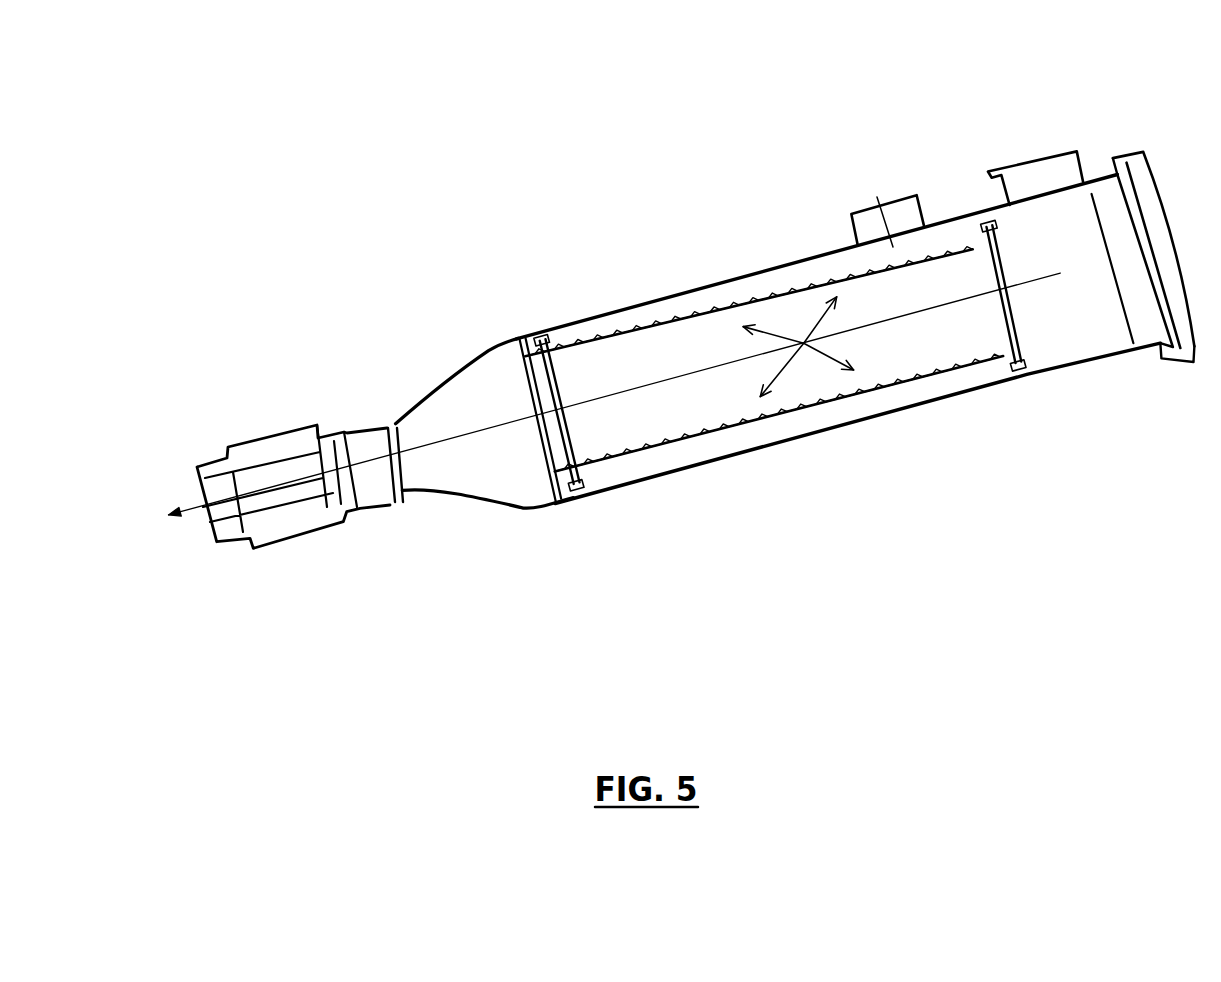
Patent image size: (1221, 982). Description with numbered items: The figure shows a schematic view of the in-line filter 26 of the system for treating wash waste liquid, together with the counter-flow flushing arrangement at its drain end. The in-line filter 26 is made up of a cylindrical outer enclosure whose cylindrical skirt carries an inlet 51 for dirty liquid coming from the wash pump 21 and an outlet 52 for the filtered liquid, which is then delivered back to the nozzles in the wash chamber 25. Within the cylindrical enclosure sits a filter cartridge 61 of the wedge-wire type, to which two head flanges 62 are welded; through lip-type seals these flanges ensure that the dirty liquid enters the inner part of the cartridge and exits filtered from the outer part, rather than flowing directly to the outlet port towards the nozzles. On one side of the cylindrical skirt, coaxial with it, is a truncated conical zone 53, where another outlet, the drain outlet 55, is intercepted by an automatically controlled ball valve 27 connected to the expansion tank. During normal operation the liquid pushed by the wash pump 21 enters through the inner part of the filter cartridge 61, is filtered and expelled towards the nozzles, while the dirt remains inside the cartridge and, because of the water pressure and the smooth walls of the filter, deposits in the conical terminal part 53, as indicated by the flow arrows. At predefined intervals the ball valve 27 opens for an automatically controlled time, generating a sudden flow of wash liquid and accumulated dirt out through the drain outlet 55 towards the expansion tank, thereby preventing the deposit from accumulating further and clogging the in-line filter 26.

The wash pump 21 is at (1061, 273).
The wash chamber 25 is at (877, 197).
The in-line filter 26 is at (338, 204).
The ball valve 27 is at (290, 427).
The inlet 51 is at (1063, 178).
The outlet 52 is at (850, 216).
The truncated conical zone 53 is at (420, 467).
The drain outlet 55 is at (178, 522).
The filter cartridge 61 is at (687, 400).
The head flanges 62 is at (593, 493).